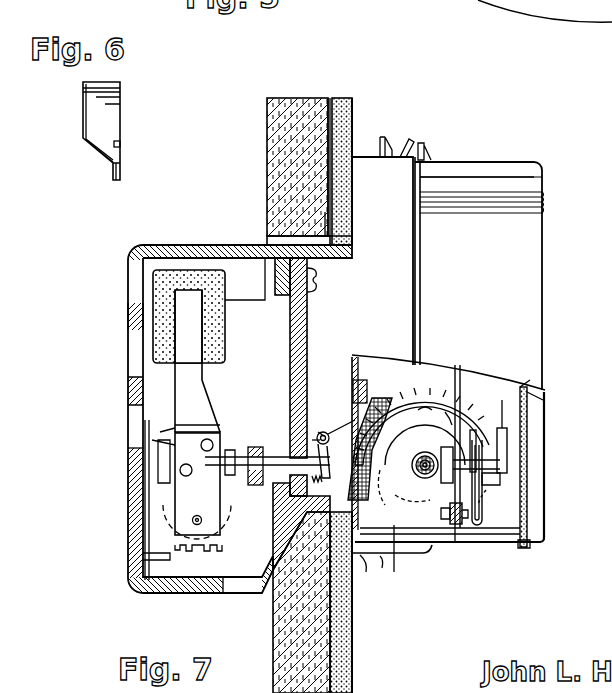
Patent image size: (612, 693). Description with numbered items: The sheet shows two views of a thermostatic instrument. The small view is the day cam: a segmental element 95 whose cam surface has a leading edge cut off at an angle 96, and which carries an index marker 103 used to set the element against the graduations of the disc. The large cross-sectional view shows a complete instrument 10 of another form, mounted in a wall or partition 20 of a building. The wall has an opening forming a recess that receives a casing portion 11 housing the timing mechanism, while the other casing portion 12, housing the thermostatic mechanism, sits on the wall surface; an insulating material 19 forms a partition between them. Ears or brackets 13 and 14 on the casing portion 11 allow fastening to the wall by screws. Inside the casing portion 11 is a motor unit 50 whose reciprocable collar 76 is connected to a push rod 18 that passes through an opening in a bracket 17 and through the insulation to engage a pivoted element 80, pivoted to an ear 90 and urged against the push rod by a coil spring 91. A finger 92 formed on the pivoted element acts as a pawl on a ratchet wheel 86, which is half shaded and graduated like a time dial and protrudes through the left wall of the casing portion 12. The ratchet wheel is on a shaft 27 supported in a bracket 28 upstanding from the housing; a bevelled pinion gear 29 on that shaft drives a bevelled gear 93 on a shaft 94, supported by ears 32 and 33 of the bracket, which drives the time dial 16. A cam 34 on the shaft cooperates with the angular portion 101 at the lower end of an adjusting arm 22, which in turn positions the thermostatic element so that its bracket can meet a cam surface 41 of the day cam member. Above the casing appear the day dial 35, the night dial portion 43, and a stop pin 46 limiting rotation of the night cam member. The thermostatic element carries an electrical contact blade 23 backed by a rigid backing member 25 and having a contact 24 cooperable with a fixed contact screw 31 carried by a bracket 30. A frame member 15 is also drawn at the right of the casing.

In FIG. 6, the segmental element 95 is at (114, 113).
In FIG. 6, the index marker 103 is at (121, 145).
In FIG. 6, the angular portion of cam surface 96 is at (97, 151).
In FIG. 7, the wall or partition 20 is at (259, 152).
In FIG. 7, the ear or bracket 13 is at (325, 225).
In FIG. 7, the casing portion 11 is at (206, 246).
In FIG. 7, the motor unit 50 is at (154, 385).
In FIG. 7, the bracket 17 is at (250, 482).
In FIG. 7, the reciprocable collar 76 is at (222, 442).
In FIG. 7, the push rod 18 is at (270, 457).
In FIG. 7, the insulating material 19 is at (307, 316).
In FIG. 7, the projection or finger 92 is at (343, 450).
In FIG. 7, the pivoted element 80 is at (317, 432).
In FIG. 7, the ear 90 is at (326, 430).
In FIG. 7, the coil spring 91 is at (325, 484).
In FIG. 7, the ear or bracket 14 is at (290, 526).
In FIG. 7, the adjusting arm 22 is at (399, 360).
In FIG. 7, the instrument 10 is at (551, 238).
In FIG. 7, the casing portion 12 is at (452, 170).
In FIG. 7, the day dial 35 is at (379, 134).
In FIG. 7, the stop pin 46 is at (410, 136).
In FIG. 7, the night dial portion 43 is at (427, 148).
In FIG. 7, the bracket 28 is at (422, 446).
In FIG. 7, the bevelled gear 93 is at (442, 452).
In FIG. 7, the ratchet wheel 86 is at (383, 398).
In FIG. 7, the cam 34 is at (437, 420).
In FIG. 7, the ear 32 is at (456, 424).
In FIG. 7, the bevelled pinion gear 29 is at (432, 480).
In FIG. 7, the shaft 27 is at (468, 471).
In FIG. 7, the ear 33 is at (507, 432).
In FIG. 7, the shaft 94 is at (480, 455).
In FIG. 7, the electrical contact blade 23 is at (491, 478).
In FIG. 7, the rigid backing member 25 is at (490, 497).
In FIG. 7, the contact 24 is at (485, 511).
In FIG. 7, the fixed contact screw 31 is at (441, 515).
In FIG. 7, the bracket 30 is at (457, 540).
In FIG. 7, the frame 15 is at (546, 407).
In FIG. 7, the time dial 16 is at (528, 488).
In FIG. 7, the cam surface 41 is at (371, 573).
In FIG. 7, the angular portion 101 is at (396, 560).